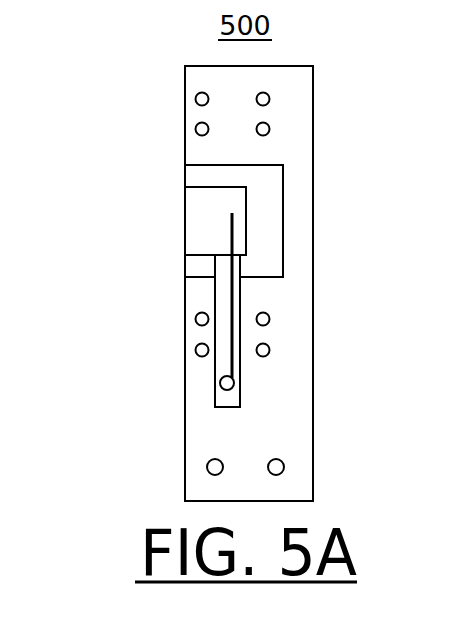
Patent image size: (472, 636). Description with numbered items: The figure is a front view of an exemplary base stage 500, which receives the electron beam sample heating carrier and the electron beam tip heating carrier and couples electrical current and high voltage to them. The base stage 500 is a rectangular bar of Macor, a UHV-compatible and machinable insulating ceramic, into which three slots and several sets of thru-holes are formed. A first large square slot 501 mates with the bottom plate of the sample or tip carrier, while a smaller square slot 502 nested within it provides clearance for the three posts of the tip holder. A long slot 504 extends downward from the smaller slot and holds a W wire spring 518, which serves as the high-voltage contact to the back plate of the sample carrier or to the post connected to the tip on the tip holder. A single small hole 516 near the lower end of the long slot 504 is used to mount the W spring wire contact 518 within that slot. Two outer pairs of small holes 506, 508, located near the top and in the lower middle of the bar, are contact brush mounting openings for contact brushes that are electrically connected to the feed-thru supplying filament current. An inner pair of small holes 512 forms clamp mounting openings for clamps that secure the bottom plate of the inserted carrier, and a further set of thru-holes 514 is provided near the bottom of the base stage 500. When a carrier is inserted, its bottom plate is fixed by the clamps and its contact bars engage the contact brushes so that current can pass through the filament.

The base stage 500 is at (249, 283).
The first large square slot 501 is at (232, 165).
The smaller square slot 502 is at (185, 250).
The long slot 504 is at (215, 295).
The contact brush mounting openings 506 is at (210, 95).
The contact brush mounting openings 508 is at (255, 352).
The clamp mounting openings 512 is at (270, 136).
The thru-holes 514 is at (226, 463).
The single small hole 516 is at (236, 382).
The W wire spring 518 is at (231, 215).